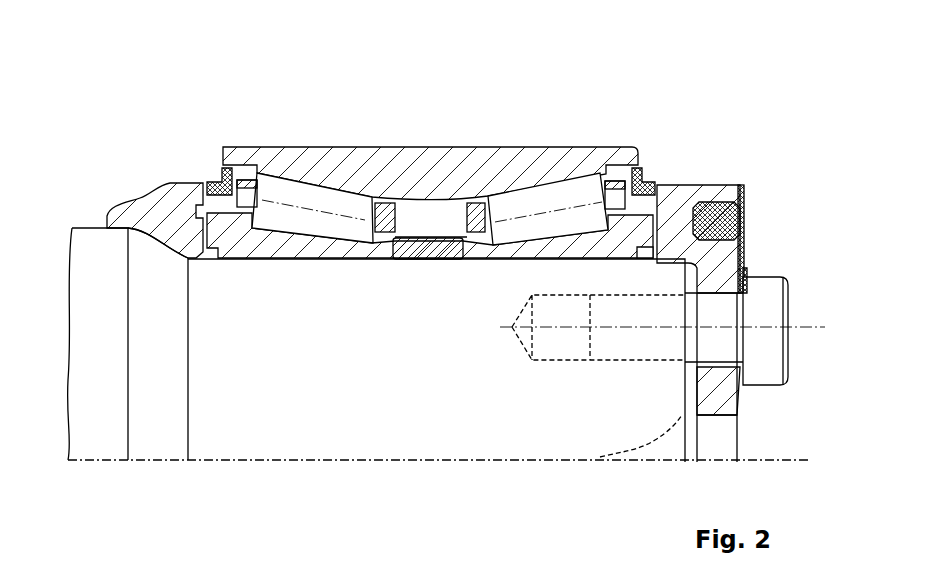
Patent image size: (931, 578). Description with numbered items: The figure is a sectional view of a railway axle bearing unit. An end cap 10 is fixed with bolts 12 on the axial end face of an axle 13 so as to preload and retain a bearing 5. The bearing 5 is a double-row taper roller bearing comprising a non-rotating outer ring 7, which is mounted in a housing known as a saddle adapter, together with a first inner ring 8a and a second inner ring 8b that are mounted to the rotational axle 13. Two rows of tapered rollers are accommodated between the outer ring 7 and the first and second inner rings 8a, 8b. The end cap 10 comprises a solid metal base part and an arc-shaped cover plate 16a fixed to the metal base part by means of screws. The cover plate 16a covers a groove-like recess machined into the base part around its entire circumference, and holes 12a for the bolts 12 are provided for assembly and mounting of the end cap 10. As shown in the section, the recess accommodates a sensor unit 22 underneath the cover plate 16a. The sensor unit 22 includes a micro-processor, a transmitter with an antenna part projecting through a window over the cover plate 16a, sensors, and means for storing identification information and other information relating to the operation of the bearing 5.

The outer ring 7 is at (361, 147).
The first inner ring 8a is at (280, 240).
The second inner ring 8b is at (590, 248).
The bearing 5 is at (572, 198).
The end cap 10 is at (673, 197).
The sensor unit 22 is at (742, 190).
The cover plate 16a is at (740, 235).
The holes for the bolts 12a is at (747, 280).
The bolt 12 is at (770, 318).
The axle 13 is at (455, 410).